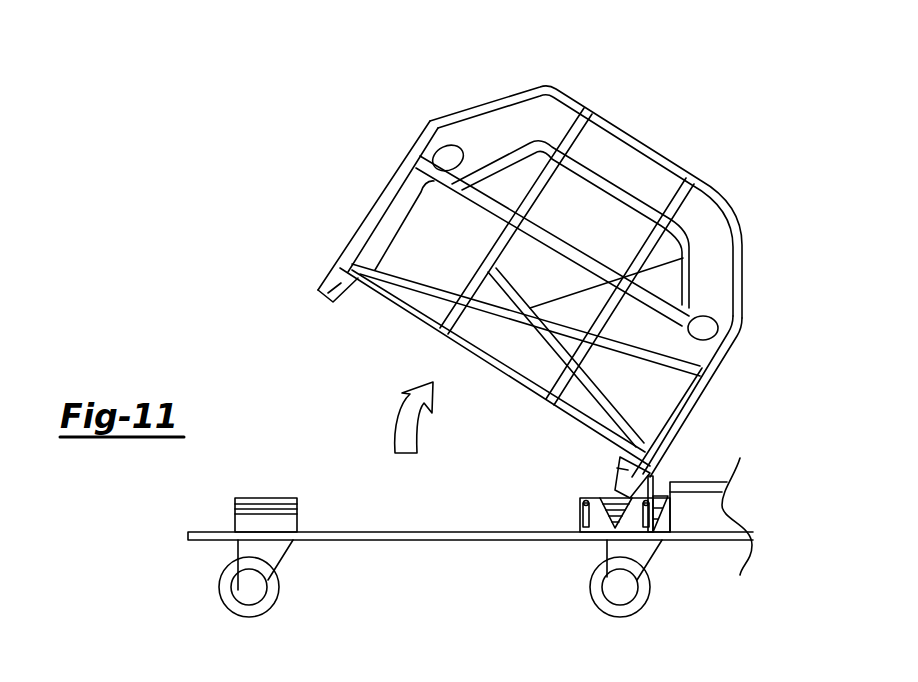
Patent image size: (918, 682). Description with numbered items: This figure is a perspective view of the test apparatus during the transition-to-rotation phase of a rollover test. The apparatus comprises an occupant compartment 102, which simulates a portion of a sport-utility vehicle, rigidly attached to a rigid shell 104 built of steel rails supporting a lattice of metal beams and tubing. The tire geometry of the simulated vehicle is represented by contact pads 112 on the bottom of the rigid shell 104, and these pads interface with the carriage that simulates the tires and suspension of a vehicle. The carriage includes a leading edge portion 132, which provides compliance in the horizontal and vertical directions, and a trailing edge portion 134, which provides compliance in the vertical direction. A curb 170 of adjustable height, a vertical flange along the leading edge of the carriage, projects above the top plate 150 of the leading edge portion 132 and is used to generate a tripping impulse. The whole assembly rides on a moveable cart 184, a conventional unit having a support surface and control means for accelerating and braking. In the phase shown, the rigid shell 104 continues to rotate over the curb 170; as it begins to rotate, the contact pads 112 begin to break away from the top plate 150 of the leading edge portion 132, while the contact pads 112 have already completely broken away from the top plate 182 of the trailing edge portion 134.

The occupant compartment 102 is at (486, 145).
The rigid shell 104 is at (525, 92).
The contact pads 112 is at (329, 293).
The leading edge portion 132 is at (565, 517).
The trailing edge portion 134 is at (312, 515).
The top plate 150 is at (597, 497).
The curb 170 is at (662, 483).
The top plate 182 is at (262, 490).
The moveable cart 184 is at (414, 542).